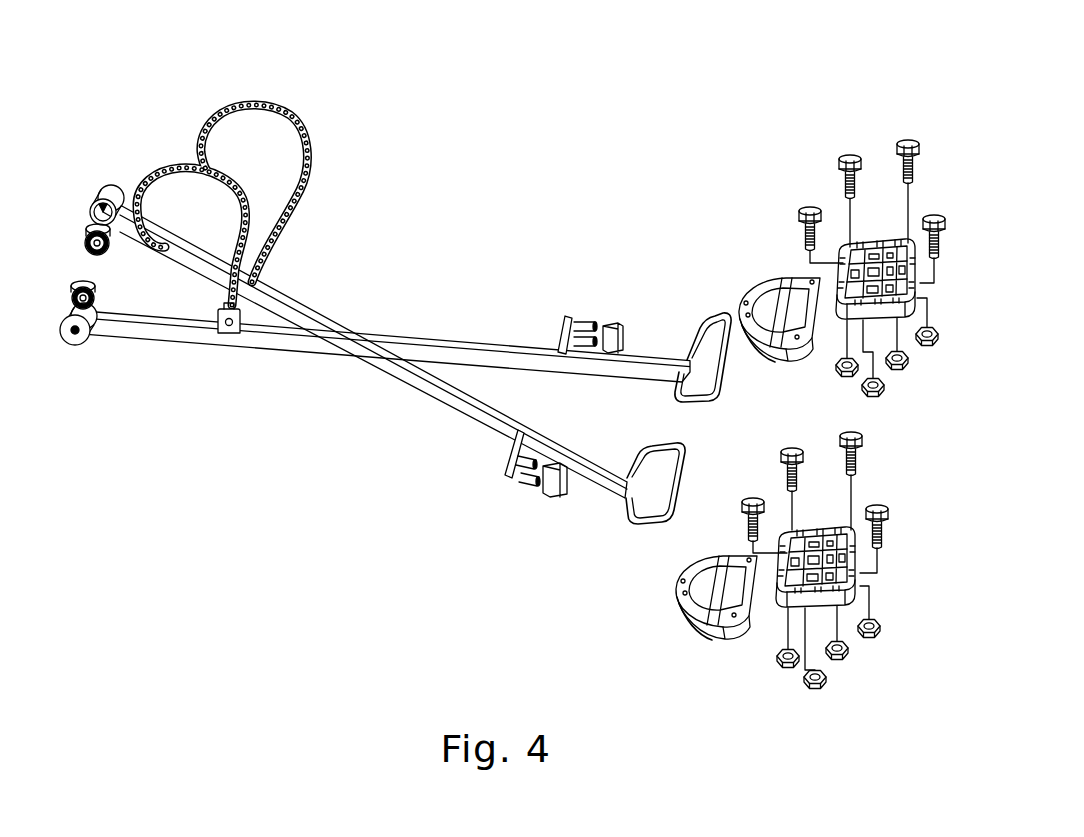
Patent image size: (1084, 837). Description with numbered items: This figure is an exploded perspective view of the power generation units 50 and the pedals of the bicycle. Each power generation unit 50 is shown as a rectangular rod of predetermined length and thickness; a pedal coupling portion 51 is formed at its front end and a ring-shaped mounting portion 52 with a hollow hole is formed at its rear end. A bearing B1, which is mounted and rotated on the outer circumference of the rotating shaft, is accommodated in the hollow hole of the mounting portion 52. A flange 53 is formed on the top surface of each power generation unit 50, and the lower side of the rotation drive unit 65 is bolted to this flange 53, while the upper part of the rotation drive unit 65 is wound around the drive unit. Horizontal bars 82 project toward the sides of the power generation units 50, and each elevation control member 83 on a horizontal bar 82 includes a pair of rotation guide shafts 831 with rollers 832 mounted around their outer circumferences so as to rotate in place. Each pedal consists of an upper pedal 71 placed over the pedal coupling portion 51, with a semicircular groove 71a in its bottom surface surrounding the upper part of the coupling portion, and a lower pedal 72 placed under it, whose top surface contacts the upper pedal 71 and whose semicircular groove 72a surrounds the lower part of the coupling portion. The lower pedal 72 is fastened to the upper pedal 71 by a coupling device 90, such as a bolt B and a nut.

The power generation unit 50 is at (150, 336).
The pedal coupling portion 51 is at (705, 306).
The mounting portion 52 is at (110, 193).
The flange 53 is at (233, 335).
The rotation drive unit 65 is at (252, 100).
The horizontal bar 82 is at (562, 322).
The elevation control member 83 is at (645, 237).
The rotation guide shaft 831 is at (586, 322).
The roller 832 is at (616, 325).
The coupling device 90 is at (825, 196).
The upper pedal 71 is at (877, 236).
The semicircular groove 71a is at (872, 319).
The lower pedal 72 is at (768, 278).
The semicircular groove 72a is at (772, 356).
The bolt B is at (851, 154).
The bearing B1 is at (90, 225).